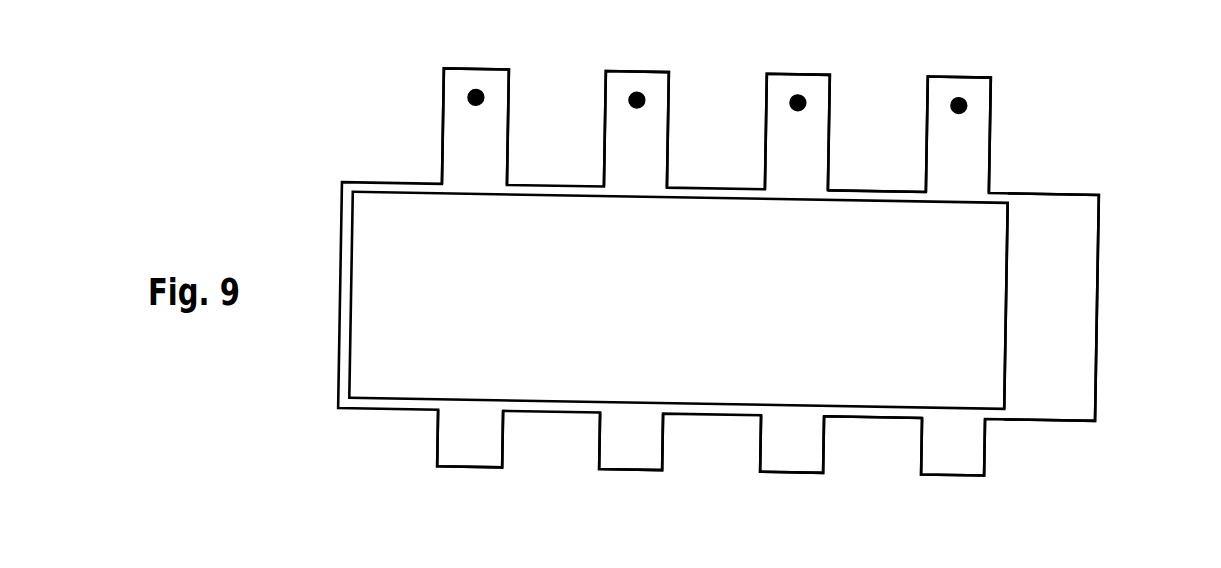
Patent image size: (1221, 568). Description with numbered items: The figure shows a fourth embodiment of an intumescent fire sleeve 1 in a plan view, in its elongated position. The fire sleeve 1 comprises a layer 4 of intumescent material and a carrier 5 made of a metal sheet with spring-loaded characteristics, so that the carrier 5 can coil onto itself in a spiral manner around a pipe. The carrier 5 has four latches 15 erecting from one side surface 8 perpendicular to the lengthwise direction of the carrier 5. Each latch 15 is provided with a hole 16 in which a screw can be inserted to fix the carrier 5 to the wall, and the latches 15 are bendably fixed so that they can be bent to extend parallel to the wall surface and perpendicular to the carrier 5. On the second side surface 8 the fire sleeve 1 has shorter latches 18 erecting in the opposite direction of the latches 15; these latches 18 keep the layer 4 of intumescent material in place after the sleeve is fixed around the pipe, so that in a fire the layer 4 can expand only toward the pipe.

The intumescent fire sleeve 1 is at (1127, 172).
The layer of intumescent material 4 is at (563, 360).
The carrier 5 is at (1077, 298).
The side surface 8 is at (876, 186).
The latch 15 is at (490, 140).
The hole 16 is at (474, 90).
The shorter latch 18 is at (476, 445).